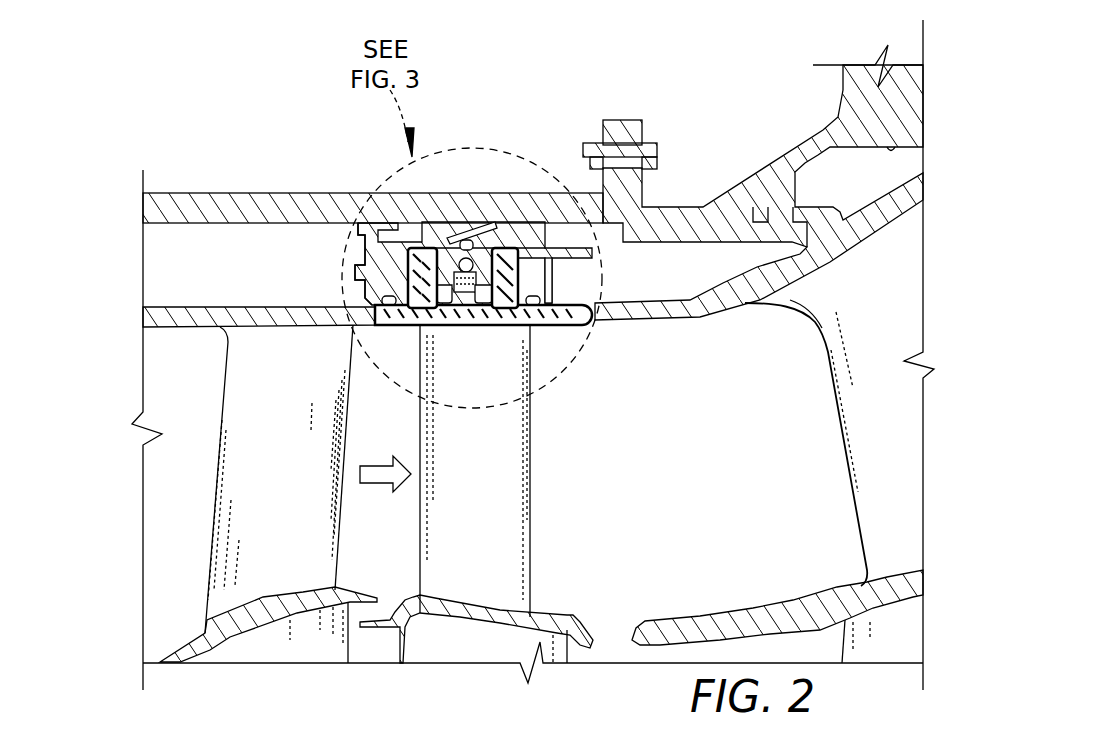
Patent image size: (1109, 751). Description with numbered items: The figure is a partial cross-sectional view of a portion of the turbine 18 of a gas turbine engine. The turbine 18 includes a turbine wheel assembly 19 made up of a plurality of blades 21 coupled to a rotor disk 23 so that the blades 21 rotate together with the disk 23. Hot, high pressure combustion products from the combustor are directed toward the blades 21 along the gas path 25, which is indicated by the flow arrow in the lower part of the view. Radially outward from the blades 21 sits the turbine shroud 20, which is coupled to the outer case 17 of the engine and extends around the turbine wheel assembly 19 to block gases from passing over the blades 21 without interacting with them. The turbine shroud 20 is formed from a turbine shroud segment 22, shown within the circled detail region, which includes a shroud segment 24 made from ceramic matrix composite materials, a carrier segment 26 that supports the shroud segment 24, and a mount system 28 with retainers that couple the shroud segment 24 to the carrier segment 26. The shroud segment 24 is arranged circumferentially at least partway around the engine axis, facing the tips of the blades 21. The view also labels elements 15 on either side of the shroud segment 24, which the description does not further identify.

The turbine blade 15 is at (165, 379).
The outer case 17 is at (222, 152).
The turbine 18 is at (158, 93).
The turbine wheel assembly 19 is at (588, 472).
The turbine shroud 20 is at (478, 172).
The blades 21 is at (545, 426).
The turbine shroud segment 22 is at (458, 195).
The rotor disk 23 is at (560, 645).
The shroud segment 24 is at (392, 348).
The gas path 25 is at (396, 435).
The carrier segment 26 is at (336, 238).
The mount system 28 is at (574, 278).